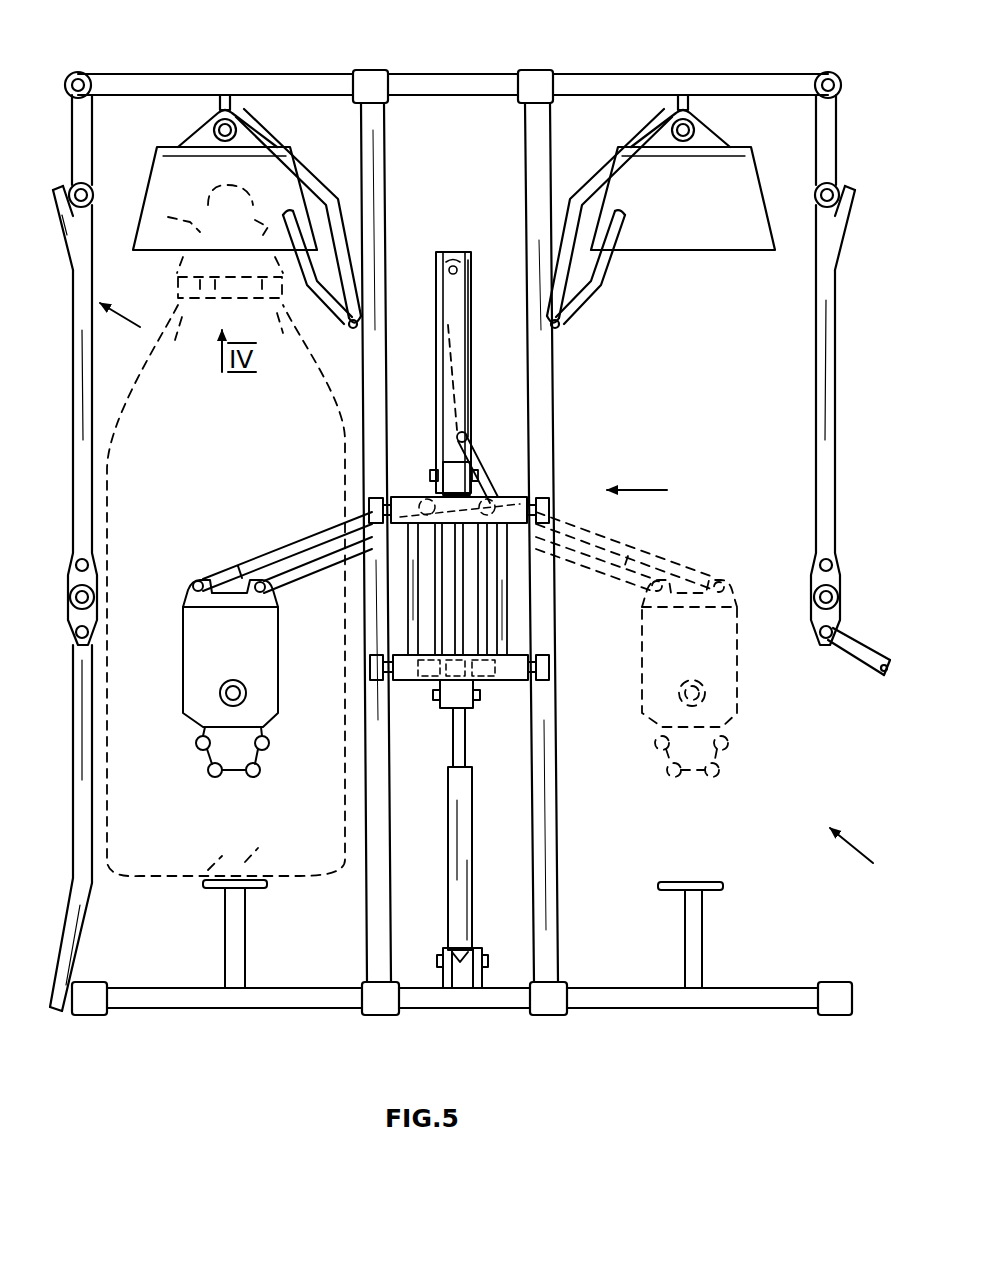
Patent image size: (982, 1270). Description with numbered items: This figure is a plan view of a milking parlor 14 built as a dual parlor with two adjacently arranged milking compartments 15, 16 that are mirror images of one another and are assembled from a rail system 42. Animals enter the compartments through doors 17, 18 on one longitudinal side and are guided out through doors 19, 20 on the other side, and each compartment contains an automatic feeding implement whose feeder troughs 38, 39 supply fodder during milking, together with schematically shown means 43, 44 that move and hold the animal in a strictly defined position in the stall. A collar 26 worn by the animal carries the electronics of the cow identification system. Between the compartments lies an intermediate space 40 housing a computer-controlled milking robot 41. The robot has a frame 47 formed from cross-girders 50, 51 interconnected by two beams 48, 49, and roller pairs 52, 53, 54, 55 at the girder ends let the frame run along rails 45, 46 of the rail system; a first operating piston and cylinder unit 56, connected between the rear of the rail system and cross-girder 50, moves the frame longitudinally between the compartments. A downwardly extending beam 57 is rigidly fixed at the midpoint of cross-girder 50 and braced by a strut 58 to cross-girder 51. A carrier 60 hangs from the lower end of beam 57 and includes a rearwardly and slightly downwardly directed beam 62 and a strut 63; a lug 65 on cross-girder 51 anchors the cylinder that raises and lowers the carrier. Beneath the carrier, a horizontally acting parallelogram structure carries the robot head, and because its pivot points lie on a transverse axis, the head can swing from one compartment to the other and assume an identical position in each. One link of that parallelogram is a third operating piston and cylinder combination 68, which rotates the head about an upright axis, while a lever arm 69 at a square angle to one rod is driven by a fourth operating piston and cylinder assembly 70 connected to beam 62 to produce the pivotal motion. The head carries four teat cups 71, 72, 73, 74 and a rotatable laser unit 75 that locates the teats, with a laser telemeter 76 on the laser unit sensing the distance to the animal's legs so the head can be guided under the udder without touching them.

The milking parlor 14 is at (661, 554).
The milking compartment 15 is at (178, 965).
The milking compartment 16 is at (775, 963).
The door 17 is at (80, 806).
The door 18 is at (867, 658).
The door 19 is at (78, 378).
The door 20 is at (823, 480).
The collar 26 is at (178, 288).
The feeder trough 38 is at (170, 168).
The feeder trough 39 is at (732, 162).
The intermediate space 40 is at (458, 535).
The milking robot 41 is at (458, 377).
The rail system 42 is at (125, 87).
The animal positioning means 43 is at (230, 930).
The animal positioning means 44 is at (693, 940).
The rail 45 is at (373, 205).
The rail 46 is at (543, 410).
The frame 47 is at (456, 709).
The beam 48 is at (413, 622).
The beam 49 is at (502, 608).
The cross-girder 50 is at (518, 688).
The cross-girder 51 is at (518, 496).
The roller pair 52 is at (370, 669).
The roller pair 53 is at (369, 506).
The roller pair 54 is at (550, 506).
The roller pair 55 is at (550, 670).
The first operating piston and cylinder unit 56 is at (470, 860).
The downwardly extending beam 57 is at (488, 697).
The strut 58 is at (458, 630).
The carrier 60 is at (435, 304).
The beam 62 is at (473, 307).
The strut 63 is at (462, 399).
The lug 65 is at (440, 467).
The third operating piston and cylinder combination 68 is at (262, 556).
The lever arm 69 is at (475, 467).
The fourth operating piston and cylinder assembly 70 is at (458, 347).
The teat cup 71 is at (196, 743).
The teat cup 72 is at (208, 771).
The teat cup 73 is at (260, 768).
The teat cup 74 is at (270, 744).
The laser unit 75 is at (215, 695).
The laser telemeter 76 is at (238, 681).